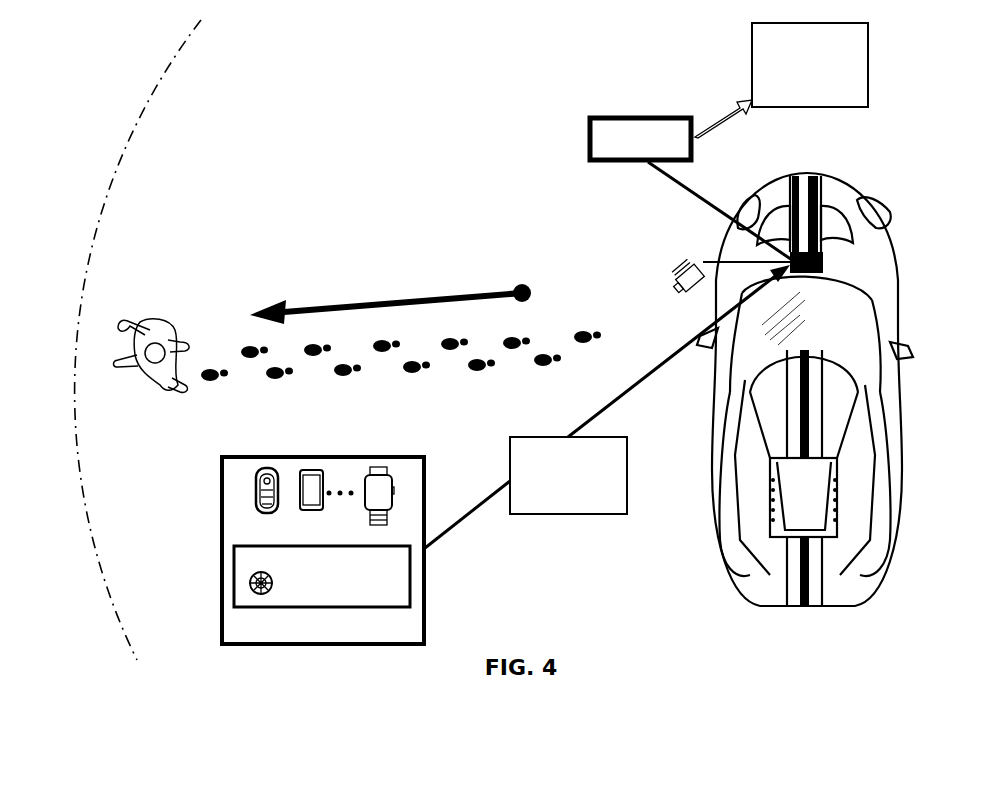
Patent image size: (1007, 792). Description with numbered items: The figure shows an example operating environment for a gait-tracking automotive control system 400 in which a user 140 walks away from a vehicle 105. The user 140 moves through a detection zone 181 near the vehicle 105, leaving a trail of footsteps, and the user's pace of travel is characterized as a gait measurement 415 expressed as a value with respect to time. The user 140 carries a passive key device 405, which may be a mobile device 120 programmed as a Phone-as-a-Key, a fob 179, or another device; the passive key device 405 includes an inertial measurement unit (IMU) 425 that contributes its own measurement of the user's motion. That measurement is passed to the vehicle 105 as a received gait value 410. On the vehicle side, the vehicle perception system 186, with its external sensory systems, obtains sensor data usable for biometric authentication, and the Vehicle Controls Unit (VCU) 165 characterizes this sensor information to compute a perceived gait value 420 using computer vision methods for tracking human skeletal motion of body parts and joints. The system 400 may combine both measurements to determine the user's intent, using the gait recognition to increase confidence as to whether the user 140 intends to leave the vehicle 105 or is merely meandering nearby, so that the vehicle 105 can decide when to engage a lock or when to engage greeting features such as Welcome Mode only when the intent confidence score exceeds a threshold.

The system 400 is at (930, 70).
The detection zone 181 is at (277, 148).
The user 140 is at (152, 322).
The gait measurement 415 is at (472, 290).
The passive key device 405 is at (323, 550).
The fob 179 is at (267, 502).
The mobile device 120 is at (311, 503).
The inertial measurement unit (IMU) 425 is at (322, 537).
The received gait value 410 is at (607, 406).
The Vehicle Controls Unit (VCU) 165 is at (692, 181).
The perceived gait value 420 is at (810, 65).
The Vehicle Perception System (VPS) 186 is at (676, 264).
The vehicle 105 is at (810, 173).